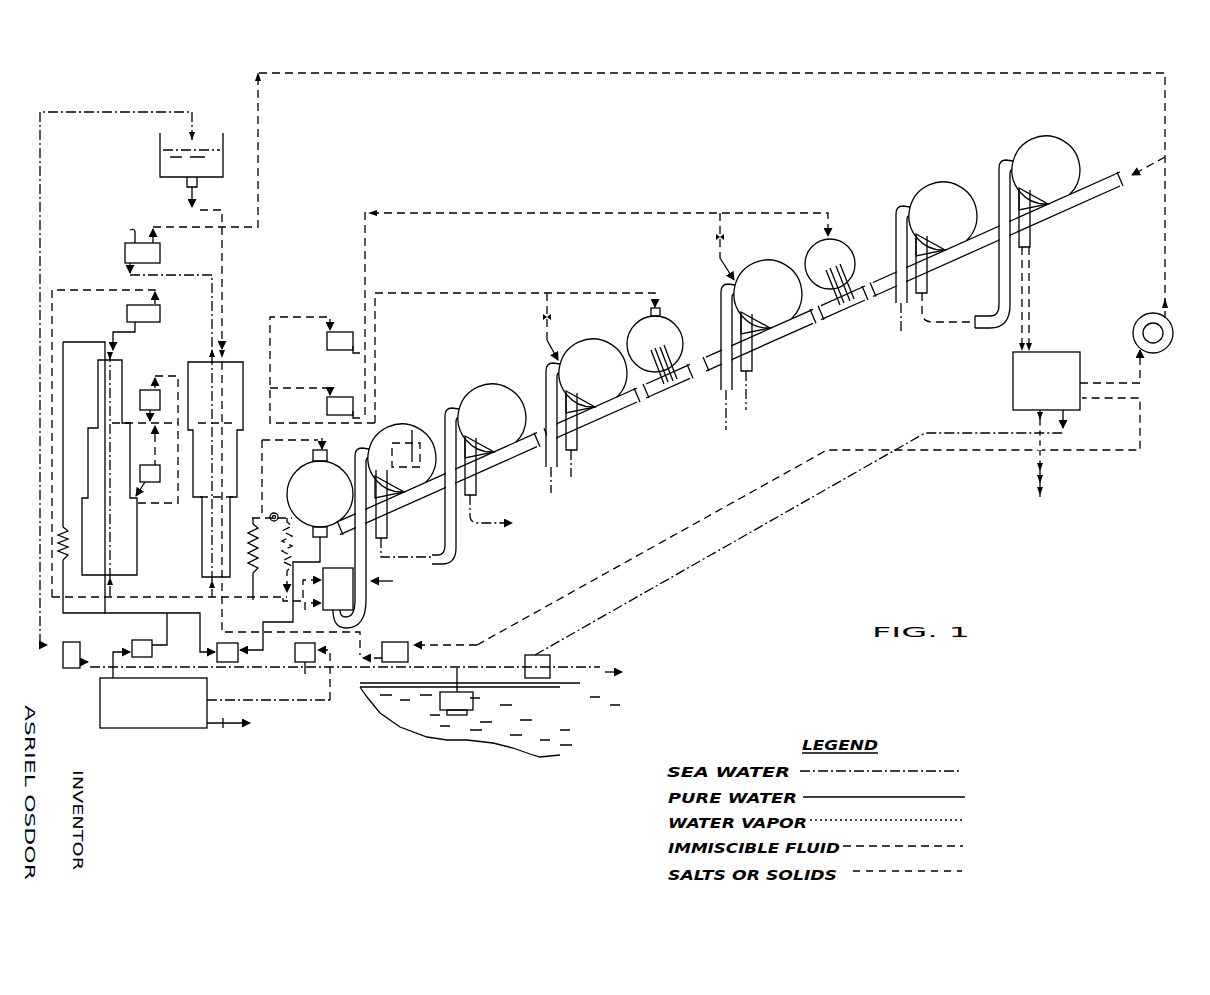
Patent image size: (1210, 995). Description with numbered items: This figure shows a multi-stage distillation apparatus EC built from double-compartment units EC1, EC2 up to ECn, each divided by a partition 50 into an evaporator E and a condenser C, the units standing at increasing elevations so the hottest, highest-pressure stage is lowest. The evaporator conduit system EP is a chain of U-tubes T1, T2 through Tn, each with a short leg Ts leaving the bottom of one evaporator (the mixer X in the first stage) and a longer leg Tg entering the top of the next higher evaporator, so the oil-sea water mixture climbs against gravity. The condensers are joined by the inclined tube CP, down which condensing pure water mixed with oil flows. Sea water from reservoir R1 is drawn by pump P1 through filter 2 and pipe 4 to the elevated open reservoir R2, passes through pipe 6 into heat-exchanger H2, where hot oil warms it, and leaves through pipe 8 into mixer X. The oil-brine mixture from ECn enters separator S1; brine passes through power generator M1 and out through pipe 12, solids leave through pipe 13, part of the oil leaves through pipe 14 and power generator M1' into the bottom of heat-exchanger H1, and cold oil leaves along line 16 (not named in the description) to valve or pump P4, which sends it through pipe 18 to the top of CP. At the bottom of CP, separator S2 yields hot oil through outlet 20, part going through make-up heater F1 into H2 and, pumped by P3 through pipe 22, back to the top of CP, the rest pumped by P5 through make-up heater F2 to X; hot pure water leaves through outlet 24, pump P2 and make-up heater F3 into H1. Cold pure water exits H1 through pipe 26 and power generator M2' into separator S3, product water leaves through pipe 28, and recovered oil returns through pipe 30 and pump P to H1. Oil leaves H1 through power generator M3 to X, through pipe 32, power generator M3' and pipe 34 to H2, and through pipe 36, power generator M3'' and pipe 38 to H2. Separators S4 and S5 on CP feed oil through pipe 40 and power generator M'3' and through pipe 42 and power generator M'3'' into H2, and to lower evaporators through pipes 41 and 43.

The filter 2 is at (472, 693).
The pipe 4 is at (446, 673).
The pipe 6 is at (226, 262).
The pipe 8 is at (223, 615).
The pipe 12 is at (597, 664).
The pipe 13 is at (1040, 468).
The pipe 14 is at (702, 523).
The conduit 16 is at (1123, 373).
The pipe 18 is at (1167, 272).
The outlet 20 is at (336, 438).
The pipe 22 is at (632, 76).
The outlet 24 is at (322, 538).
The pipe 26 is at (105, 615).
The pipe 28 is at (228, 734).
The pipe 30 is at (240, 700).
The outlet pipe 32 is at (148, 501).
The pipe 34 is at (155, 440).
The outlet pipe 36 is at (142, 438).
The pipe 38 is at (178, 375).
The pipe 40 is at (602, 213).
The pipe 41 is at (731, 279).
The pipe 42 is at (587, 298).
The pipe 43 is at (552, 352).
The partition 50 is at (378, 445).
The reservoir R1 is at (558, 736).
The open reservoir R2 is at (160, 165).
The pump P1 is at (66, 668).
The pump P2 is at (238, 654).
The pump P3 is at (161, 412).
The valve or pump P4 is at (1173, 336).
The pump P5 is at (276, 513).
The pump P is at (305, 667).
The separator S1 is at (1046, 390).
The separator S2 is at (302, 488).
The oil-water separator S3 is at (153, 690).
The separator S4 is at (830, 272).
The separator S5 is at (655, 346).
The heat-exchanger H1 is at (98, 362).
The heat-exchanger H2 is at (243, 362).
The power generator M1 is at (794, 555).
The power generator M1' is at (398, 641).
The power generator M2' is at (162, 637).
The power generator M3 is at (152, 327).
The power generator M3' is at (166, 492).
The power generator M3'' is at (132, 387).
The power generator M'3' is at (326, 342).
The power generator M'3'' is at (326, 407).
The make-up heater F1 is at (262, 559).
The second make-up heater F2 is at (295, 555).
The make-up heater F3 is at (66, 563).
The mixer X is at (318, 589).
The condenser C is at (415, 442).
The evaporator E is at (372, 456).
The multi-stage distillation apparatus EC is at (1000, 126).
The first-stage unit EC1 is at (400, 425).
The second-stage unit EC2 is at (476, 388).
The last-stage unit ECn is at (1048, 137).
The inclined tube CP is at (428, 537).
The evaporator conduit system EP is at (413, 590).
The U-tube T1 is at (368, 606).
The U-tube T2 is at (458, 552).
The U-tube Tn is at (998, 290).
The short leg Ts is at (334, 617).
The longer leg Tg is at (366, 569).